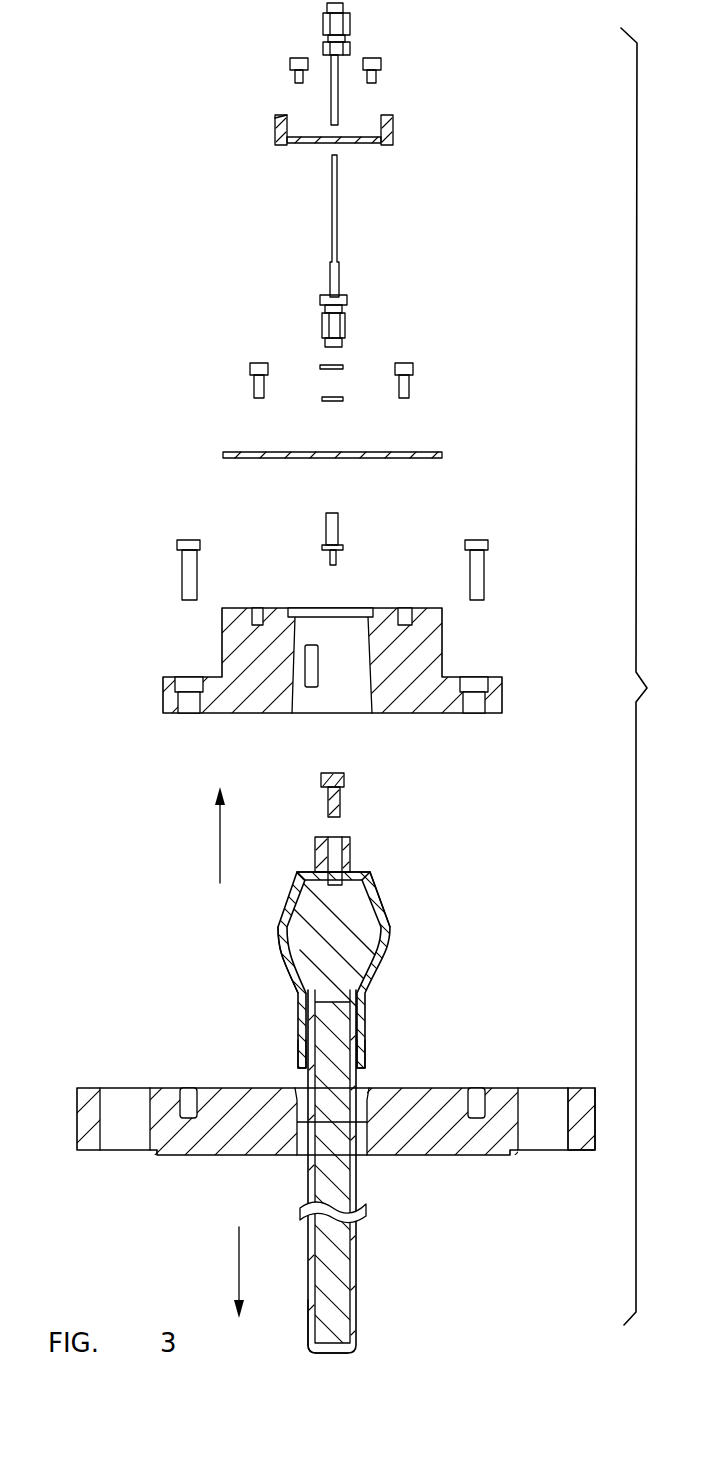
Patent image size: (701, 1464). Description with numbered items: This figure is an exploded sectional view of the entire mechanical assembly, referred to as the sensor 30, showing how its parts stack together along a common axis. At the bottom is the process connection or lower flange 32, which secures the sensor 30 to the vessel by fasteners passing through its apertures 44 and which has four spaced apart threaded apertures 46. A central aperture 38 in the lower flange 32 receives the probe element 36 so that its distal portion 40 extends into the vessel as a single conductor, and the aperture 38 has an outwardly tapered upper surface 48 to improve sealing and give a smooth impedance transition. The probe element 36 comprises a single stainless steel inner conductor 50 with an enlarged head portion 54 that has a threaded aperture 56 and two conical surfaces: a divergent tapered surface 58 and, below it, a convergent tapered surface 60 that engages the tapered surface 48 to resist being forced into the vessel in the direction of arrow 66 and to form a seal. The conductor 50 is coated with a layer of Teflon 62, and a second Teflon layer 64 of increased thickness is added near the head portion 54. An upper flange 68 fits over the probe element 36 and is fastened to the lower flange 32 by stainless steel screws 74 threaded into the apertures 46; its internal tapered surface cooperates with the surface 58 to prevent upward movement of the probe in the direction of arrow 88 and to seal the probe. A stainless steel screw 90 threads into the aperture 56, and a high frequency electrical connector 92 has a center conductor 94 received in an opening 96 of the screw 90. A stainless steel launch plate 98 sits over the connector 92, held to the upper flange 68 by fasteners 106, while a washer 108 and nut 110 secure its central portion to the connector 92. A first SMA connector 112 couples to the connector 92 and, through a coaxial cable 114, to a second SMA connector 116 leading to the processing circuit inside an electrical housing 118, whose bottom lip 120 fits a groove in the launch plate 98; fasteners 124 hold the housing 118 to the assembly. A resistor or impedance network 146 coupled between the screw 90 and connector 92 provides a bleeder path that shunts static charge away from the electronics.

The sensor 30 is at (58, 640).
The lower flange 32 is at (88, 1082).
The probe element 36 is at (400, 955).
The aperture 38 is at (365, 1148).
The distal portion 40 is at (368, 1343).
The apertures 44 is at (570, 1110).
The threaded apertures 46 is at (216, 1046).
The outwardly tapered upper surface 48 is at (366, 1087).
The inner conductor 50 is at (333, 1250).
The head portion 54 is at (353, 931).
The threaded aperture 56 is at (330, 838).
The tapered surface 58 is at (366, 877).
The tapered surface 60 is at (299, 967).
The Teflon layer 62 is at (307, 1313).
The second layer of Teflon 64 is at (379, 893).
The arrow 66 is at (239, 1258).
The upper flange 68 is at (506, 672).
The stainless steel screws 74 is at (180, 568).
The arrow 88 is at (220, 848).
The stainless steel screw 90 is at (341, 798).
The high frequency electrical connector 92 is at (339, 522).
The center conductor 94 is at (337, 562).
The opening 96 is at (343, 773).
The launch plate 98 is at (442, 446).
The fastener 106 is at (250, 367).
The washer 108 is at (343, 398).
The nut 110 is at (320, 366).
The first SMA connector 112 is at (343, 322).
The coaxial cable 114 is at (338, 210).
The second SMA connector 116 is at (351, 22).
The electrical housing 118 is at (394, 127).
The bottom lip 120 is at (283, 147).
The fasteners 124 is at (292, 63).
The resistor or impedance network 146 is at (318, 666).